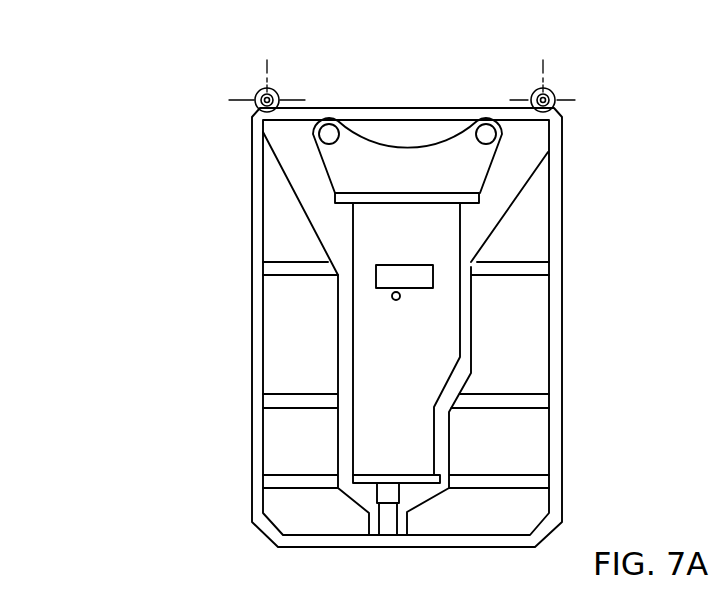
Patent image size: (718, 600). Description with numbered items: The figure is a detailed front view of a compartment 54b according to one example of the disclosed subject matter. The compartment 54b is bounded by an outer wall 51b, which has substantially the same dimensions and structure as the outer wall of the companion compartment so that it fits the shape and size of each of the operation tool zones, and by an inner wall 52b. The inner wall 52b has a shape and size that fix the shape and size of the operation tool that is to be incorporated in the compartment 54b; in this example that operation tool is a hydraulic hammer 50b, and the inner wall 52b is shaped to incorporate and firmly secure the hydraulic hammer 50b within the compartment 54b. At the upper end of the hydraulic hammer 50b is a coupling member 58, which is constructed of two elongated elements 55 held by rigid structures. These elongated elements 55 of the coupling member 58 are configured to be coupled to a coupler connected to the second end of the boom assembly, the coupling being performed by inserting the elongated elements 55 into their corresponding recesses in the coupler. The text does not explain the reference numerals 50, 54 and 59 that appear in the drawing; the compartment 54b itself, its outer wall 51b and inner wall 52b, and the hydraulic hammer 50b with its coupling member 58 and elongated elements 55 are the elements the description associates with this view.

The tool assembly 50 is at (360, 97).
The hydraulic hammer 50b is at (437, 308).
The outer wall 51b is at (560, 238).
The inner wall 52b is at (510, 206).
The housing 54 is at (193, 270).
The compartment 54b is at (513, 360).
The elongated elements 55 is at (486, 134).
The coupling member 58 is at (402, 165).
The corner bolt 59 is at (258, 92).